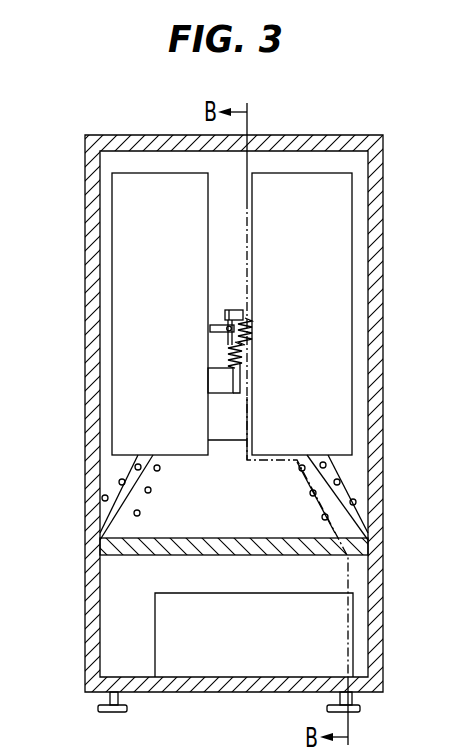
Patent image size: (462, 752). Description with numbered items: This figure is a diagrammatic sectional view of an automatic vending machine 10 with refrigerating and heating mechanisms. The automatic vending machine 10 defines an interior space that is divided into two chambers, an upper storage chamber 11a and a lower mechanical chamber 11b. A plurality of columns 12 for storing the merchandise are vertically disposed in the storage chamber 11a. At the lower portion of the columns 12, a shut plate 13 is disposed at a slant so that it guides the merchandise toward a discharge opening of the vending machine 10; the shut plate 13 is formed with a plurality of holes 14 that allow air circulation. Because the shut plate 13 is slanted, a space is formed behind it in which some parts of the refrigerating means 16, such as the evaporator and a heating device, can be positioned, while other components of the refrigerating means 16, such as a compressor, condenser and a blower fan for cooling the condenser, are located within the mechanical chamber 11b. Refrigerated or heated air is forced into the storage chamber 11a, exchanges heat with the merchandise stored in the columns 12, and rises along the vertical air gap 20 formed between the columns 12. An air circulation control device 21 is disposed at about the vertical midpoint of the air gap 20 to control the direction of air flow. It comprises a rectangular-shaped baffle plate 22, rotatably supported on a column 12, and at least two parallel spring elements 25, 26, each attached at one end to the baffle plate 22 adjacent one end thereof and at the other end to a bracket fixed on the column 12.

The automatic vending machine 10 is at (382, 166).
The storage chamber 11a is at (363, 236).
The mechanical chamber 11b is at (345, 620).
The columns 12 is at (152, 183).
The shut plate 13 is at (312, 508).
The holes 14 is at (103, 498).
The refrigerating means 16 is at (330, 660).
The vertical air gap 20 is at (222, 247).
The air circulation control device 21 is at (255, 328).
The baffle plate 22 is at (226, 312).
The spring element 25 is at (250, 345).
The spring element 26 is at (232, 350).